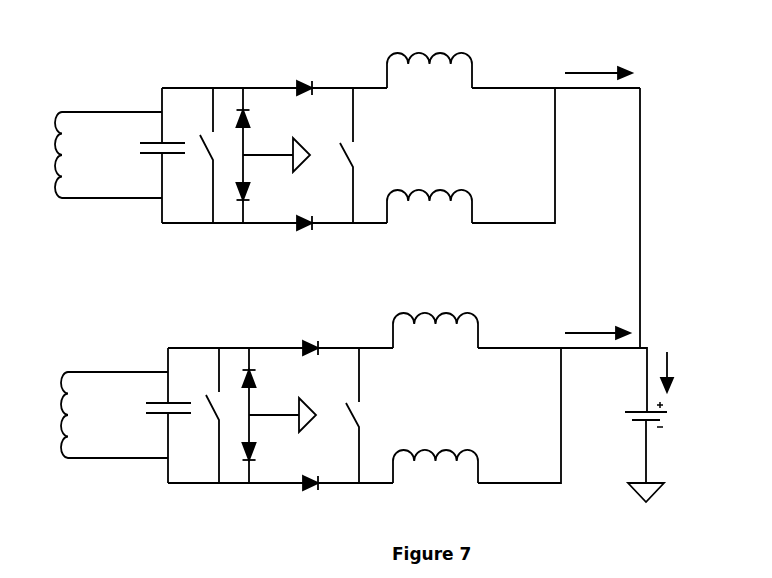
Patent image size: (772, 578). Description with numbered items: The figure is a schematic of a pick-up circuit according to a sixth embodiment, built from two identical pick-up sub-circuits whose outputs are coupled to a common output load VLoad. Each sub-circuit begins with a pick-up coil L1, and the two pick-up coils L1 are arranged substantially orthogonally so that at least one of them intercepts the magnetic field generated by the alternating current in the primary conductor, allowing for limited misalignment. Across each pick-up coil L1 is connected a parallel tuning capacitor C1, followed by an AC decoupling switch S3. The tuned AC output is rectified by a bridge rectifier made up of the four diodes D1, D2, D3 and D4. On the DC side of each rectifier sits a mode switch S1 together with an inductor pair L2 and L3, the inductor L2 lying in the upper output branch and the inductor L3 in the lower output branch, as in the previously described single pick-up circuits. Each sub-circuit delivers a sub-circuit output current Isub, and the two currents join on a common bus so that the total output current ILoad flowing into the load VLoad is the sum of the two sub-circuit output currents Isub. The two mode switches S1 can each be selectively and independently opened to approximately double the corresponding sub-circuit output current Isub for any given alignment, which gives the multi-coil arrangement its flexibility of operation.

The pick-up coil L1 is at (93, 285).
The parallel tuning capacitor C1 is at (149, 290).
The AC decoupling switch S3 is at (200, 285).
The diode D1 is at (312, 202).
The diode D2 is at (266, 252).
The diode D3 is at (266, 325).
The diode D4 is at (312, 374).
The mode switch S1 is at (365, 285).
The inductor L2 is at (432, 186).
The inductor L3 is at (432, 322).
The sub-circuit output current Isub is at (598, 189).
The total output current ILoad is at (695, 372).
The common output load VLoad is at (678, 452).